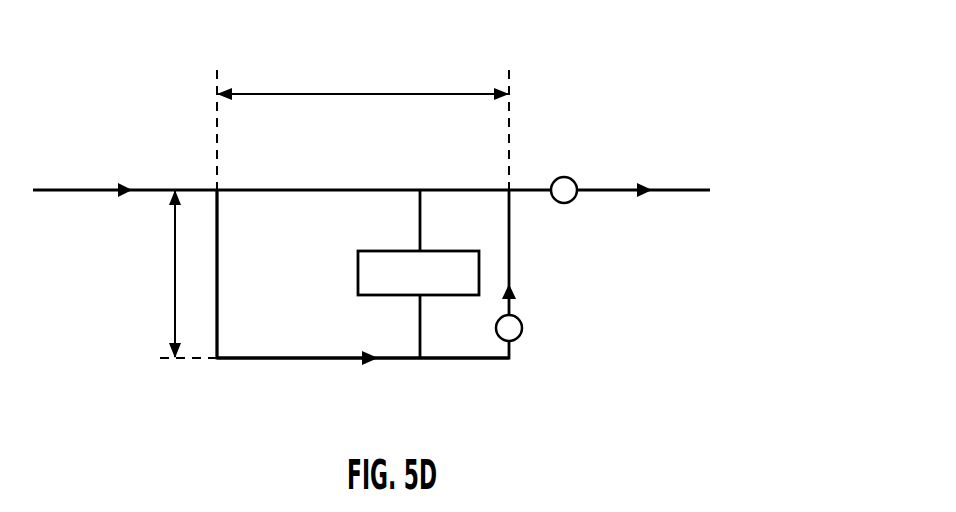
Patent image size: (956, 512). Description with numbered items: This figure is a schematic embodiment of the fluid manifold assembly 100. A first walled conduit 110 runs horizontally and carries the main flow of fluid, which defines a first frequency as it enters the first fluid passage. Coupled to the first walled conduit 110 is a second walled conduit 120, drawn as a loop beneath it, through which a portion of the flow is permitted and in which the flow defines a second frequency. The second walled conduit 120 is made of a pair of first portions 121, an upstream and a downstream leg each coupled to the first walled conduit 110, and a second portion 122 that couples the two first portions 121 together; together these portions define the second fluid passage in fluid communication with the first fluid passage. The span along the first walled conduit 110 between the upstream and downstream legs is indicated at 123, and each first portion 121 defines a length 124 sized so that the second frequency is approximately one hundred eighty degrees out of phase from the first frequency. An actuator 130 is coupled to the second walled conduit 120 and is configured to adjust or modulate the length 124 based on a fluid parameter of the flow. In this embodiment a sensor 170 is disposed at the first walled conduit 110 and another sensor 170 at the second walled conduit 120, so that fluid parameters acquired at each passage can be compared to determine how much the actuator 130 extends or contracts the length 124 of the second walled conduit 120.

The fluid manifold assembly 100 is at (602, 38).
The first walled conduit 110 is at (300, 190).
The second walled conduit 120 is at (279, 377).
The first portions 121 is at (218, 296).
The second portion 122 is at (460, 362).
The bypass length 123 is at (371, 94).
The length 124 is at (174, 276).
The actuator 130 is at (390, 249).
The sensor 170 is at (574, 181).